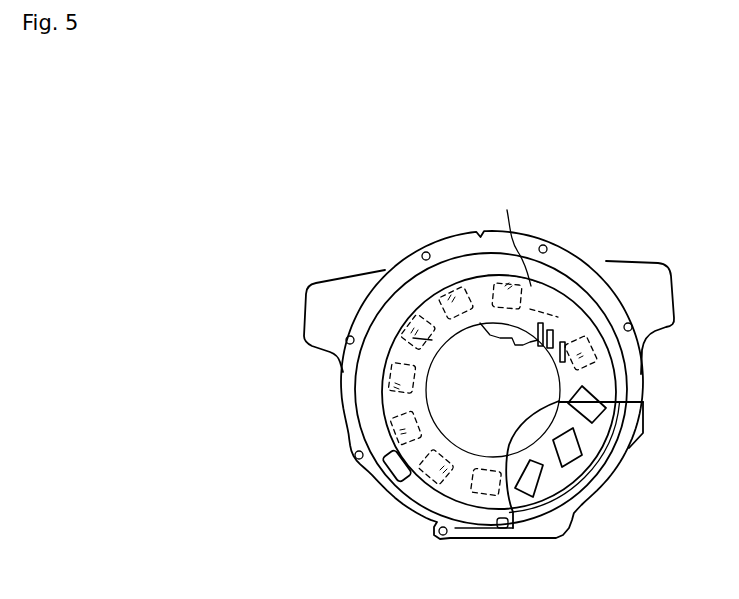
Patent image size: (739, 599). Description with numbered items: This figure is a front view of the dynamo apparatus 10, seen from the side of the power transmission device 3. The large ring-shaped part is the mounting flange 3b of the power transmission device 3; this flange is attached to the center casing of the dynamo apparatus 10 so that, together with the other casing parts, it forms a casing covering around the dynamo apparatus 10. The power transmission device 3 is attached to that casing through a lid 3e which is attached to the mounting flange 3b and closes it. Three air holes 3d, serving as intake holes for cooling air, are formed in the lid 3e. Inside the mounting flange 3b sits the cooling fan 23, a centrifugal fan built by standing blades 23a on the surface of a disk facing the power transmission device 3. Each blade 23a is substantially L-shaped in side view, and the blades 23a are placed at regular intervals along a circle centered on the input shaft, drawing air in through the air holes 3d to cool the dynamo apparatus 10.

The power transmission device 3 is at (460, 539).
The mounting flange 3b is at (444, 229).
The air holes 3d is at (563, 345).
The lid 3e is at (514, 230).
The dynamo apparatus 10 is at (621, 247).
The cooling fan 23 is at (597, 446).
The blades 23a is at (532, 496).